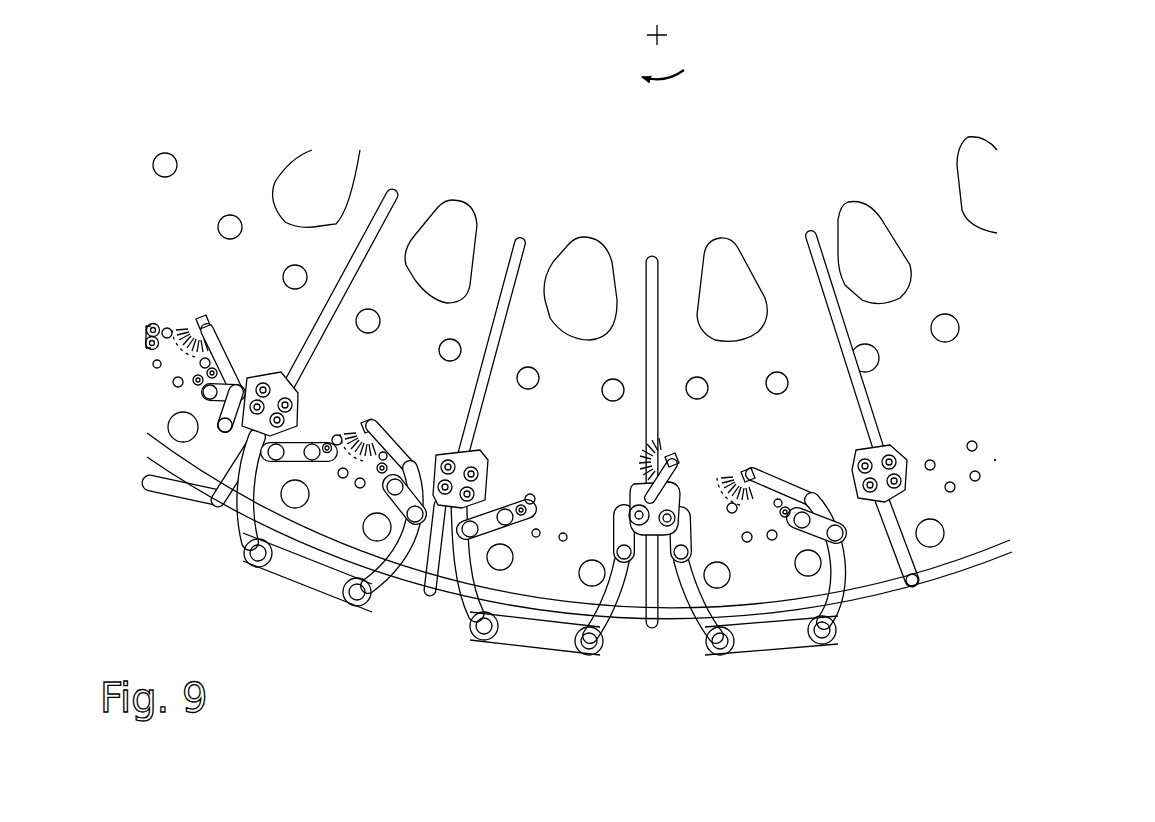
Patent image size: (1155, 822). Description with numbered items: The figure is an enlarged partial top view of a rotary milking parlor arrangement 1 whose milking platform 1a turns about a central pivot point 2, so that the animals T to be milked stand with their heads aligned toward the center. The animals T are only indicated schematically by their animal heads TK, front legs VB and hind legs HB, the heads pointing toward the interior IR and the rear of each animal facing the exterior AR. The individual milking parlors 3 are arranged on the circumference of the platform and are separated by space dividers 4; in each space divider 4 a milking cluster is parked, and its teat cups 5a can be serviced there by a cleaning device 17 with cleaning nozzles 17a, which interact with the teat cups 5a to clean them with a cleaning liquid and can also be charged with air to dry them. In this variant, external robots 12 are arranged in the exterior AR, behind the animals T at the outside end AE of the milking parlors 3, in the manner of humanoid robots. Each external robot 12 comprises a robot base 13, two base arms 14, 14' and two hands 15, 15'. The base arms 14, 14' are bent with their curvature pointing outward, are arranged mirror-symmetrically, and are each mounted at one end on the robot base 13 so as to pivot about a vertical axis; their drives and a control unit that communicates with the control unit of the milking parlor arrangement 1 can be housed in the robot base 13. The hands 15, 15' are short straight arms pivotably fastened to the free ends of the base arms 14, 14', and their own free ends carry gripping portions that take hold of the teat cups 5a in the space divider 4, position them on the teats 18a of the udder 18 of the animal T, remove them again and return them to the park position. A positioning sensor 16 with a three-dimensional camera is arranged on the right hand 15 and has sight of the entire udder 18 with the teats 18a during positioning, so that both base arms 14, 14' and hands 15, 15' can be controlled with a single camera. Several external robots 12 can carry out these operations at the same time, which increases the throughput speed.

The milking parlor arrangement 1 is at (741, 122).
The milking platform 1a is at (1008, 556).
The pivot point 2 is at (632, 38).
The milking parlor 3 is at (487, 244).
The space divider 4 is at (393, 193).
The teat cup 5a is at (150, 320).
The external robot 12 is at (292, 600).
The robot base 13 is at (540, 642).
The base arm 14 is at (617, 618).
The base arm 14' is at (446, 574).
The hand 15 is at (642, 505).
The hand 15' is at (514, 496).
The positioning sensor 16 is at (372, 424).
The cleaning device 17 is at (301, 392).
The cleaning nozzles 17a is at (287, 401).
The udder 18 is at (995, 460).
The teats 18a is at (970, 442).
The inner region IR is at (651, 133).
The exterior AR is at (987, 703).
The animal T is at (883, 190).
The animal head TK is at (880, 247).
The front legs VB is at (953, 327).
The outside end AE is at (990, 538).
The hind legs HB is at (937, 538).